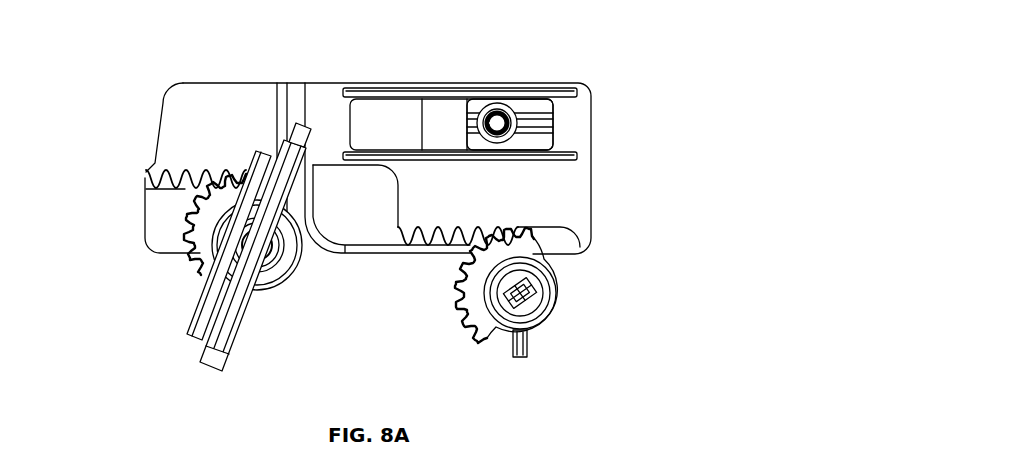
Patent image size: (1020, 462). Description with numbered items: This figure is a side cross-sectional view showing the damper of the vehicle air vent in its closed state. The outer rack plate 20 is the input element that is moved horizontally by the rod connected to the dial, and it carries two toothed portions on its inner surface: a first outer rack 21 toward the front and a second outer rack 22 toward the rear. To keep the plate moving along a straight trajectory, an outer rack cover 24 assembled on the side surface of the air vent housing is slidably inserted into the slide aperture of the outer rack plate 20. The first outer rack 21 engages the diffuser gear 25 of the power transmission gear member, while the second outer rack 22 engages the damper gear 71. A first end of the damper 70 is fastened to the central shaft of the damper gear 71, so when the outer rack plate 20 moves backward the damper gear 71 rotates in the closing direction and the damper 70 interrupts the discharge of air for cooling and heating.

The outer rack plate 20 is at (594, 86).
The first outer rack 21 is at (424, 248).
The second outer rack 22 is at (150, 189).
The outer rack cover 24 is at (540, 121).
The diffuser gear 25 is at (478, 306).
The damper 70 is at (224, 340).
The damper gear 71 is at (184, 258).